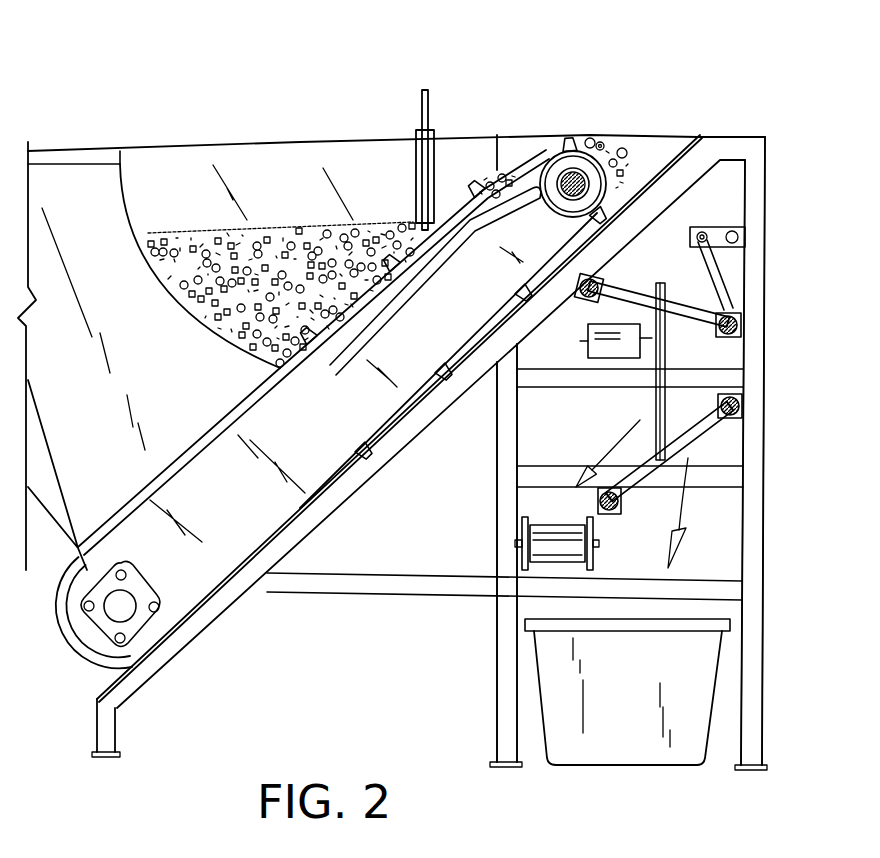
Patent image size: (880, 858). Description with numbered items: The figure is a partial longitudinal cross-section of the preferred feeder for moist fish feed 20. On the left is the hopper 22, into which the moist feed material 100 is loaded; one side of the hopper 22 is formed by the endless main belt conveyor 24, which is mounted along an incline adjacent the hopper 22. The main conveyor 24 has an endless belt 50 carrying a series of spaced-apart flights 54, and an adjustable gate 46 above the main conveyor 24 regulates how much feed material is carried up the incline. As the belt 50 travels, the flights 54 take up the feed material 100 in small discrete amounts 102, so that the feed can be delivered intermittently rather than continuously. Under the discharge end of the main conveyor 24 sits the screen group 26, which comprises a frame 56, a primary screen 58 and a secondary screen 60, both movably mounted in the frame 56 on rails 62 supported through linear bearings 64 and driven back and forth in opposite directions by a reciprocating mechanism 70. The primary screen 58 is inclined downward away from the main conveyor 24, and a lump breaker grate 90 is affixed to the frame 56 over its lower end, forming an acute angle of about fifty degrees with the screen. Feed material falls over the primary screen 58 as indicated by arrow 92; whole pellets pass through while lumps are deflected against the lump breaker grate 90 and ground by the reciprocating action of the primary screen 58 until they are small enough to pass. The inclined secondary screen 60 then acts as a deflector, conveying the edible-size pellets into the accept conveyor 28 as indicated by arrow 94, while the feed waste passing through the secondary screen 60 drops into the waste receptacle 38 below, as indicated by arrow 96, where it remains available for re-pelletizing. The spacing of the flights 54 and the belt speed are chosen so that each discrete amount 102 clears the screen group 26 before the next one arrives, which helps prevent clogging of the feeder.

The feeder for moist fish feed 20 is at (167, 43).
The hopper 22 is at (76, 150).
The main belt conveyor 24 is at (230, 515).
The screen group 26 is at (760, 103).
The accept conveyor 28 is at (552, 562).
The waste receptacle 38 is at (717, 682).
The adjustable gate 46 is at (418, 112).
The endless belt 50 is at (652, 257).
The flights 54 is at (573, 124).
The frame 56 is at (767, 173).
The primary screen 58 is at (740, 293).
The secondary screen 60 is at (690, 420).
The rails 62 is at (742, 406).
The linear bearings 64 is at (620, 510).
The reciprocating mechanism 70 is at (590, 347).
The lump breaker grate 90 is at (720, 268).
The arrow 92 is at (657, 230).
The arrow 94 is at (645, 398).
The arrow 96 is at (680, 510).
The feed material 100 is at (283, 232).
The discrete amounts 102 is at (490, 168).